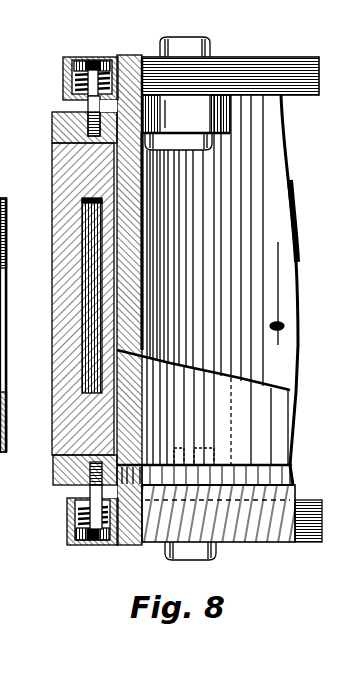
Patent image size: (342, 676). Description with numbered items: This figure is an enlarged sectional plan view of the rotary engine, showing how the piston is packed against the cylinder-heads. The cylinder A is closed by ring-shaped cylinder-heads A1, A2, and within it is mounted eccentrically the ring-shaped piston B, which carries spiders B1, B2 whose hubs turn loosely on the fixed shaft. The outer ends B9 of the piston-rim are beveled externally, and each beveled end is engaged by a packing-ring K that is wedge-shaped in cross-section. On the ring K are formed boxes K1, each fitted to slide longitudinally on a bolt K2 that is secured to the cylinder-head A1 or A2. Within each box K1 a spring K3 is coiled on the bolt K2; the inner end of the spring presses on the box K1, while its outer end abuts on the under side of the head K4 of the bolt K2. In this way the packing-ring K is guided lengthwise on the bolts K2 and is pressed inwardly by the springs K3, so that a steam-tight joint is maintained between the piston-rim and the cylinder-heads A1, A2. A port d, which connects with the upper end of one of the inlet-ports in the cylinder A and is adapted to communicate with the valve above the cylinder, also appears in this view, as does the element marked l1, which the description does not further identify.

The cylinder A is at (55, 333).
The cylinder-head A1 is at (52, 127).
The cylinder-head A2 is at (53, 476).
The port d is at (82, 290).
The packing-ring K is at (135, 57).
The outer end of piston-rim B9 is at (143, 55).
The piston B is at (233, 307).
The spider B1 is at (252, 51).
The spider B2 is at (275, 530).
The box K1 is at (63, 62).
The bolt K2 is at (88, 106).
The spring K3 is at (72, 83).
The head of bolt K4 is at (91, 61).
The link l1 is at (40, 520).